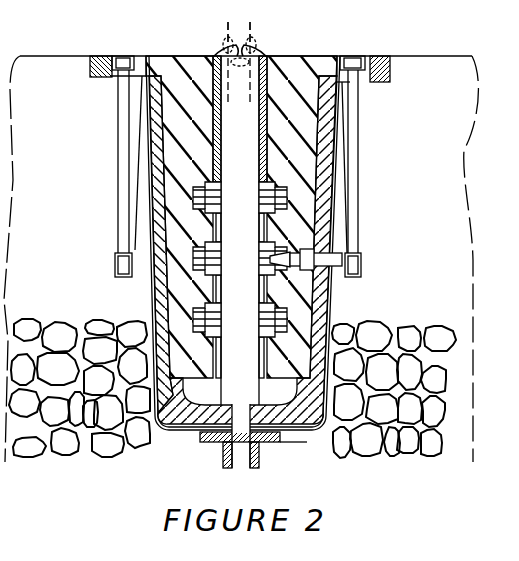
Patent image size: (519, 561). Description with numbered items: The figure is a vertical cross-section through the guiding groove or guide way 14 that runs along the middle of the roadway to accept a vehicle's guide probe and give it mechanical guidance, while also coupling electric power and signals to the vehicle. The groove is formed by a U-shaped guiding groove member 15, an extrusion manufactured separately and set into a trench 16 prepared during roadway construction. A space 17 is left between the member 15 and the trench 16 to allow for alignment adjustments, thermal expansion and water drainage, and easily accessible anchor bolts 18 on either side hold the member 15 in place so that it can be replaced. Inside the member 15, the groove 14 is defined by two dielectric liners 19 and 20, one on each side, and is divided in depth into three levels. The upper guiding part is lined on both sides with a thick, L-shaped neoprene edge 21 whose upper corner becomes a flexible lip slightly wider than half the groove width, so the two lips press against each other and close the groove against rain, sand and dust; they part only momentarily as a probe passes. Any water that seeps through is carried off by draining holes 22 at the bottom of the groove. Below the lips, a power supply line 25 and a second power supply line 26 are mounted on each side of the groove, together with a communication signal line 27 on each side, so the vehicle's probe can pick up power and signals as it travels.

The guiding groove 14 is at (248, 200).
The guiding groove member 15 is at (331, 296).
The trench 16 is at (330, 378).
The space 17 is at (308, 434).
The anchor bolts 18 is at (118, 128).
The dielectric liner 19 is at (300, 146).
The dielectric liner 20 is at (192, 140).
The neoprene edge 21 is at (197, 56).
The draining holes 22 is at (238, 451).
The power supply line 25 is at (200, 337).
The power supply line 26 is at (200, 244).
The communication signal line 27 is at (210, 184).